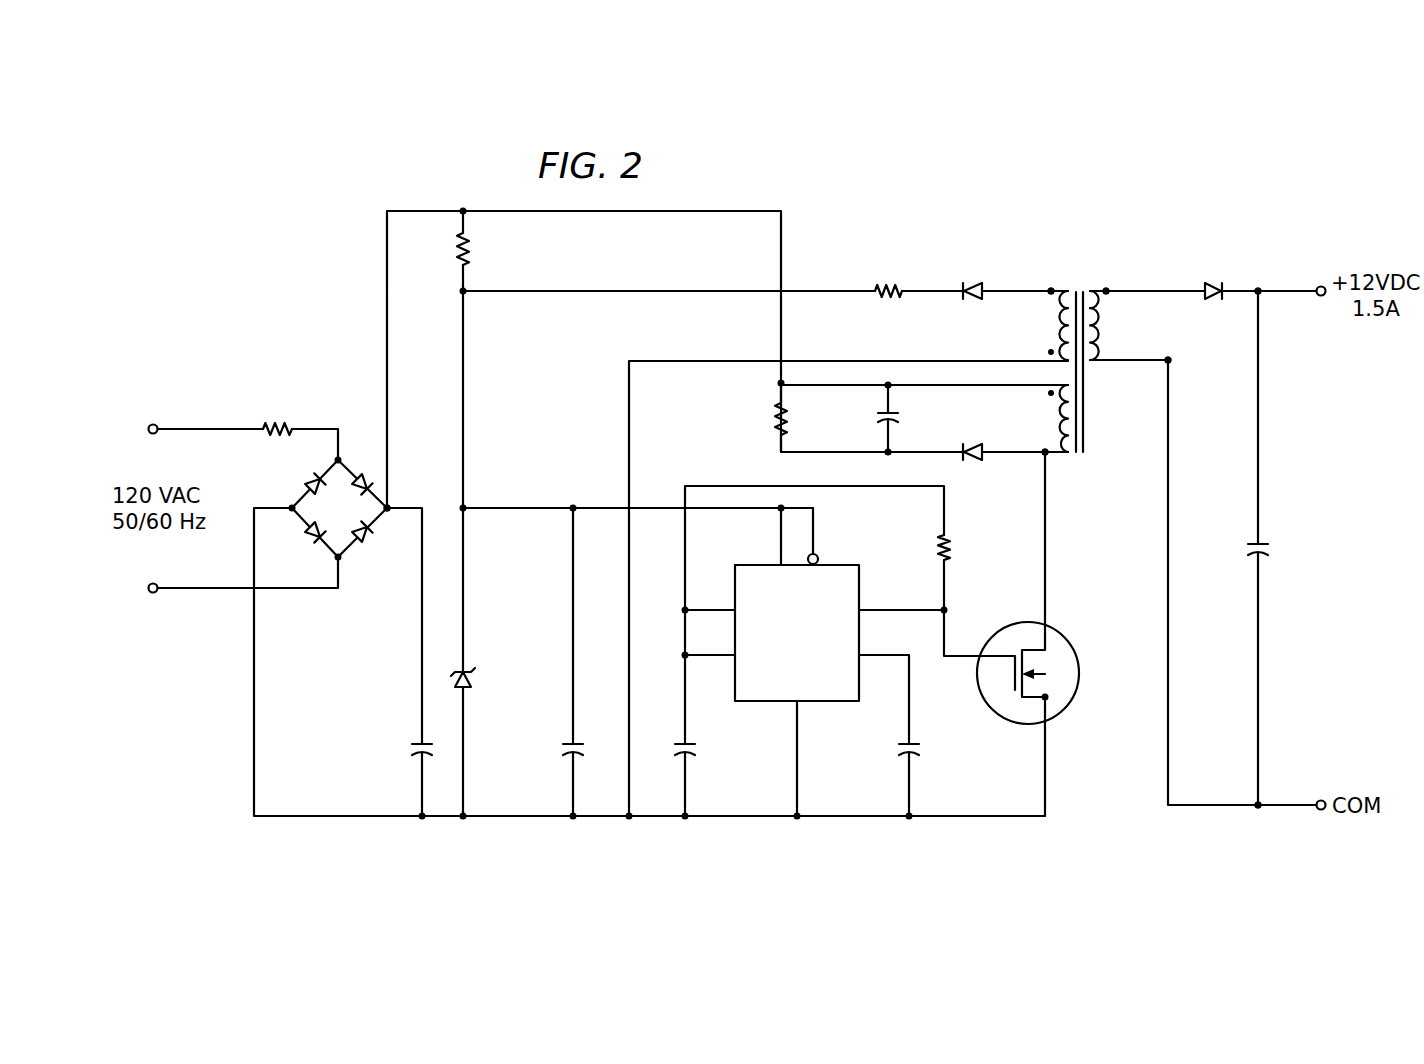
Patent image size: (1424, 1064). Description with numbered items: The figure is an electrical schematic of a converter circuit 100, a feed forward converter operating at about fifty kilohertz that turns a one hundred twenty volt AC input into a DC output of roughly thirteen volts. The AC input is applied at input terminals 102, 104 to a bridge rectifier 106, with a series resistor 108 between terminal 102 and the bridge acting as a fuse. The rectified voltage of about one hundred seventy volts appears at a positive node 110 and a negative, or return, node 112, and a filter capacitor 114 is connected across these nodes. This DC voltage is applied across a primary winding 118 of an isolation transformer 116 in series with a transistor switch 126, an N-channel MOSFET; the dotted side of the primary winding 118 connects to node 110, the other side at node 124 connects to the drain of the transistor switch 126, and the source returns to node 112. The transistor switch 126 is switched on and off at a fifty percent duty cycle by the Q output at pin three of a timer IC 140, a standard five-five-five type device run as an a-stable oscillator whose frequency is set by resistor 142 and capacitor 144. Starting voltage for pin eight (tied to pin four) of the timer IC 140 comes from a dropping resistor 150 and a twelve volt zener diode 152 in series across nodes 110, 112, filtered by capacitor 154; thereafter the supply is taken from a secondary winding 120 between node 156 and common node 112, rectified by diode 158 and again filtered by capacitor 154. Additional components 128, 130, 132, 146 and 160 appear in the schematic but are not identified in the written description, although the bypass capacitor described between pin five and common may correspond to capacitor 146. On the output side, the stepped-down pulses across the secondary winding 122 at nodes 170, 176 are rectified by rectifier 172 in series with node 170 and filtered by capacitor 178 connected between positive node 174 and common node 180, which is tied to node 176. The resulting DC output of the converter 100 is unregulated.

The converter circuit 100 is at (298, 178).
The input terminal 102 is at (153, 424).
The input terminal 104 is at (153, 593).
The bridge rectifier 106 is at (326, 540).
The series resistor 108 is at (272, 425).
The positive node 110 is at (389, 506).
The negative node 112 is at (290, 505).
The filter capacitor 114 is at (410, 750).
The isolation transformer 116 is at (1080, 291).
The primary winding 118 is at (1060, 422).
The secondary winding 120 is at (1059, 325).
The secondary winding 122 is at (1098, 325).
The node 124 is at (1048, 455).
The transistor switch 126 is at (1080, 673).
The feedback diode 128 is at (968, 445).
The feedback capacitor 130 is at (884, 418).
The feedback resistor 132 is at (776, 420).
The timer IC 140 is at (840, 562).
The resistor 142 is at (950, 550).
The capacitor 144 is at (696, 750).
The threshold capacitor 146 is at (920, 750).
The dropping resistor 150 is at (470, 253).
The zener diode 152 is at (472, 680).
The capacitor 154 is at (562, 750).
The node 156 is at (1051, 288).
The diode 158 is at (968, 288).
The primary resistor 160 is at (880, 288).
The node 170 is at (1109, 289).
The rectifier 172 is at (1218, 288).
The positive node 174 is at (1262, 295).
The node 176 is at (1168, 364).
The capacitor 178 is at (1268, 553).
The common node 180 is at (1262, 803).